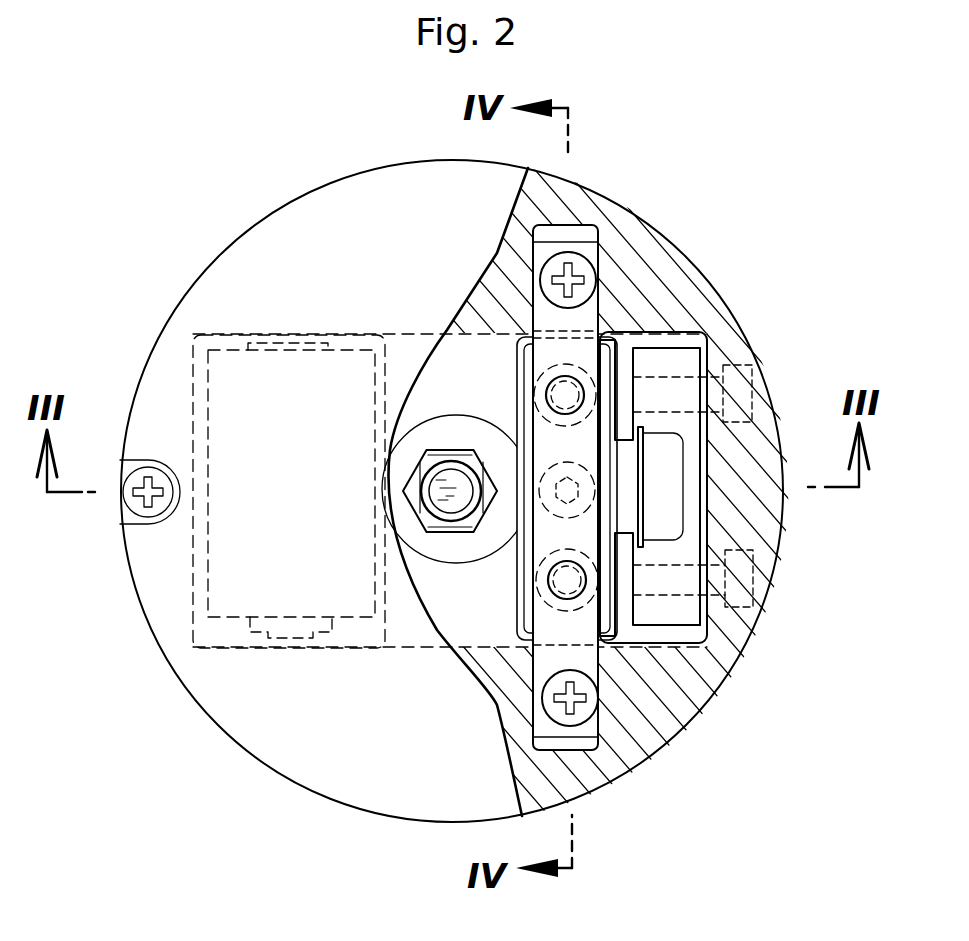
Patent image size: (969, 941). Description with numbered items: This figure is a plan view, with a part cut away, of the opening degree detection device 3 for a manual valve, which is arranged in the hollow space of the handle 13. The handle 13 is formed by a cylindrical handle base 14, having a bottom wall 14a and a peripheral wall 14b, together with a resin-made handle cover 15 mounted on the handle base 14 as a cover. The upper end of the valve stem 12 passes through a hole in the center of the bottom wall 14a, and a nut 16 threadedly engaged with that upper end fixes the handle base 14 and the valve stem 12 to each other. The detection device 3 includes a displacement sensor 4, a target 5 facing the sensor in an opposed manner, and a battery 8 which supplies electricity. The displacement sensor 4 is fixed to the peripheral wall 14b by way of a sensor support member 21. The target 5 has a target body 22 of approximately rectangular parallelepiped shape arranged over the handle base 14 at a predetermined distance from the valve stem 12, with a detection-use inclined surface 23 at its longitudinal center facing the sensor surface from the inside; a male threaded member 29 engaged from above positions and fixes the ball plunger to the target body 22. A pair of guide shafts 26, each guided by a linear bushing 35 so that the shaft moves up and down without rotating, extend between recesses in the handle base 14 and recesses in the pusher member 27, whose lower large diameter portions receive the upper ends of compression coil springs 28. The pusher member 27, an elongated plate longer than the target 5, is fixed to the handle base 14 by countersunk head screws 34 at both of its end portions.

The opening degree detection device 3 is at (712, 245).
The displacement sensor 4 is at (647, 483).
The target 5 is at (628, 511).
The battery 8 is at (223, 548).
The valve stem 12 is at (438, 507).
The handle 13 is at (665, 725).
The handle base 14 is at (672, 685).
The bottom wall 14a is at (447, 613).
The peripheral wall 14b is at (765, 505).
The handle cover 15 is at (270, 738).
The nut 16 is at (430, 450).
The sensor support member 21 is at (688, 358).
The target body 22 is at (607, 548).
The detection-use inclined surface 23 is at (640, 463).
The guide shaft 26 is at (560, 397).
The pusher member 27 is at (587, 313).
The compression coil spring 28 is at (553, 377).
The male threaded member 29 is at (550, 507).
The countersunk head screw 34 is at (552, 705).
The linear bushing 35 is at (560, 363).